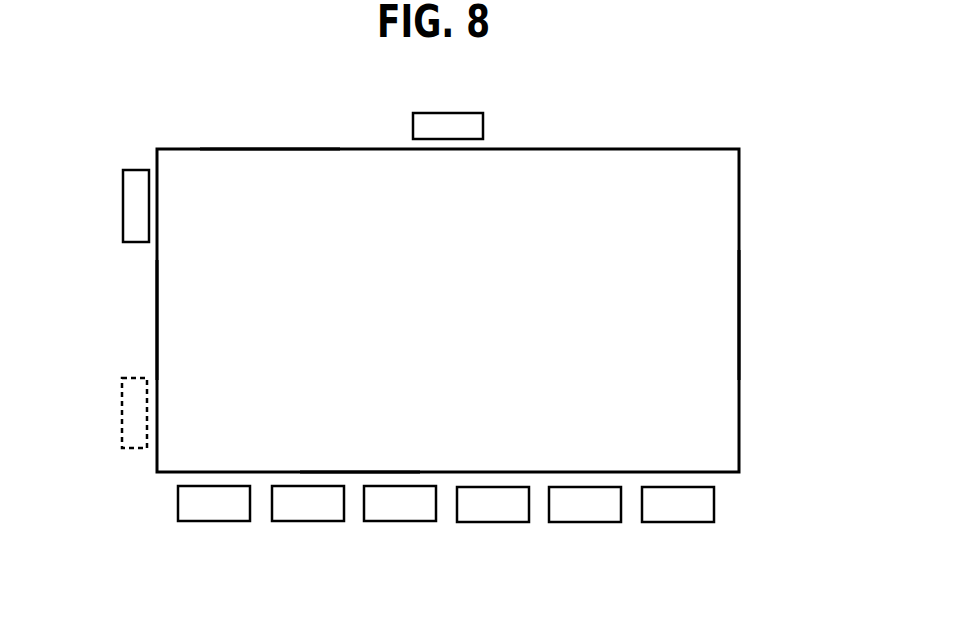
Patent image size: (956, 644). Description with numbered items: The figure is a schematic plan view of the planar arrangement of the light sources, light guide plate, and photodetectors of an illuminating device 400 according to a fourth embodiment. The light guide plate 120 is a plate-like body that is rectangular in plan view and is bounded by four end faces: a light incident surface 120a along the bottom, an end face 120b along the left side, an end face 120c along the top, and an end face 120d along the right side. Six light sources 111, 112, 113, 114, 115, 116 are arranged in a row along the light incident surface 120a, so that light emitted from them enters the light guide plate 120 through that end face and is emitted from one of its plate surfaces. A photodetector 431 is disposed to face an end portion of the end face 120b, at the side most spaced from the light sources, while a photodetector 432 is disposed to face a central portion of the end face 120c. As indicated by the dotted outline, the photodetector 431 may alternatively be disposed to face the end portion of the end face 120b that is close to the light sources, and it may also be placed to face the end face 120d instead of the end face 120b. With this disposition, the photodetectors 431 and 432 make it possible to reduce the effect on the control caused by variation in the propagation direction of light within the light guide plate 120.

The illuminating device 400 is at (332, 66).
The light guide plate 120 is at (722, 188).
The light incident surface 120a is at (356, 474).
The end face 120b is at (157, 309).
The end face 120c is at (277, 147).
The end face 120d is at (739, 315).
The light source 111 is at (214, 521).
The light source 112 is at (308, 521).
The light source 113 is at (400, 521).
The light source 114 is at (493, 522).
The light source 115 is at (585, 522).
The light source 116 is at (678, 522).
The photodetector 431 is at (123, 207).
The photodetector 432 is at (483, 129).